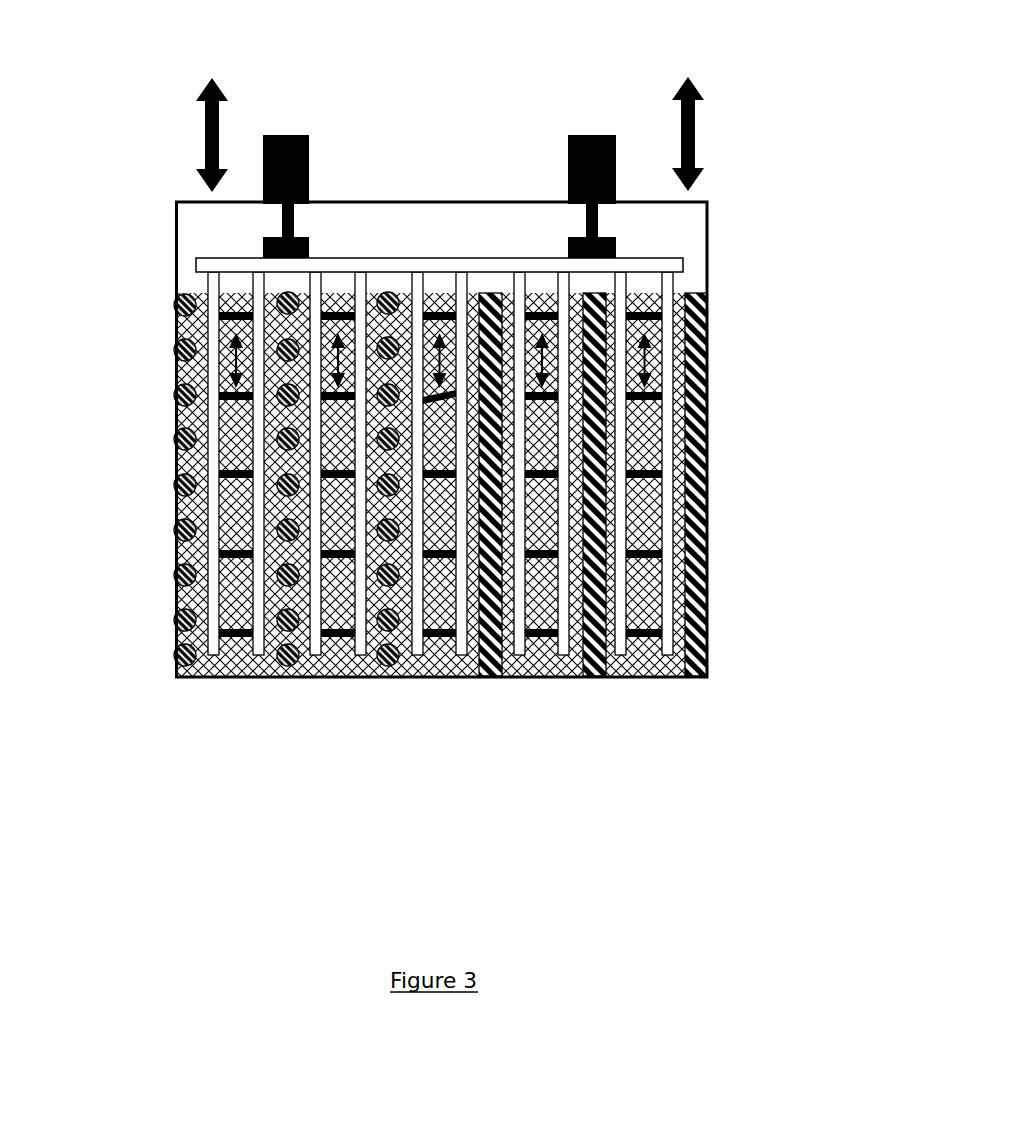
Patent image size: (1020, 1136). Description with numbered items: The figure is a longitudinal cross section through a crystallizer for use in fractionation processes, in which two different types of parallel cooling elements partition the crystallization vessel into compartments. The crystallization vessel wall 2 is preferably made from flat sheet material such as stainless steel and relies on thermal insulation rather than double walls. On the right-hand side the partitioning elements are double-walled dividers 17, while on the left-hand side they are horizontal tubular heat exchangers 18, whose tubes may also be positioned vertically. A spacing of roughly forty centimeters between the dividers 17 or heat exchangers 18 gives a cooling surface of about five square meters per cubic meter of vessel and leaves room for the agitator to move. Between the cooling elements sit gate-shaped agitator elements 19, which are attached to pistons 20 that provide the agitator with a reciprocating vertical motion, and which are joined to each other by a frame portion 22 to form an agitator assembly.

The crystallization vessel wall 2 is at (709, 448).
The double-walled dividers 17 is at (520, 678).
The horizontal tubular heat exchangers 18 is at (177, 592).
The agitator elements 19 is at (672, 290).
The pistons 20 is at (600, 133).
The frame portion 22 is at (443, 258).